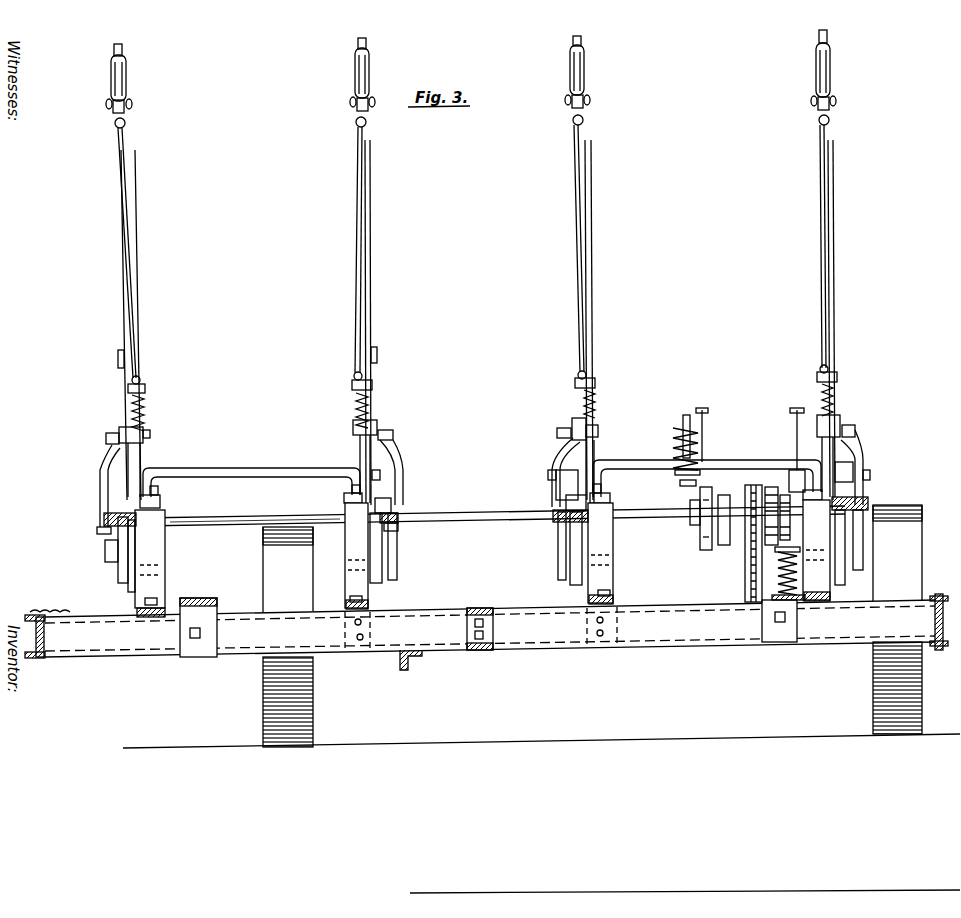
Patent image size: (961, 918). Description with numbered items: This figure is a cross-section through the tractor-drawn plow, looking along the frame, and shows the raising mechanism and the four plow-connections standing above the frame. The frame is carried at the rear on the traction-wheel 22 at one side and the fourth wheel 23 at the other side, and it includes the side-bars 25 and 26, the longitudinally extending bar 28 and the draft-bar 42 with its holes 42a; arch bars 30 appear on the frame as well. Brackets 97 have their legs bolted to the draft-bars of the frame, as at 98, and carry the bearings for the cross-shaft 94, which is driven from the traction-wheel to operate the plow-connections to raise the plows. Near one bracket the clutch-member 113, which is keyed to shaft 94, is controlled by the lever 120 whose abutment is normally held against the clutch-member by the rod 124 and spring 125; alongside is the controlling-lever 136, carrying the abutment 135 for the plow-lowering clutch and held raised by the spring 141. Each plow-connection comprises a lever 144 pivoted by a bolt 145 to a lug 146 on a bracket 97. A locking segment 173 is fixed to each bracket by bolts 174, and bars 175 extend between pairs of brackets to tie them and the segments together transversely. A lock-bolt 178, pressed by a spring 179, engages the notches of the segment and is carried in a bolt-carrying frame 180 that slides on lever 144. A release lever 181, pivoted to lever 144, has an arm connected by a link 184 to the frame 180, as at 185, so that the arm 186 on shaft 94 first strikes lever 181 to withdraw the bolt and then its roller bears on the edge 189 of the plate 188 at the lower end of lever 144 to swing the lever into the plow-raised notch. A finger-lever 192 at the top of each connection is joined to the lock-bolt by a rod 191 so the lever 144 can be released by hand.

The traction-wheel 22 is at (873, 676).
The fourth wheel 23 is at (313, 700).
The side-bar 25 is at (935, 620).
The side-bar 26 is at (47, 640).
The longitudinally extending bar 28 is at (410, 662).
The arch bar 30 is at (206, 604).
The draft-bar 42 is at (480, 608).
The bolt holes 42a is at (364, 625).
The cross-shaft 94 is at (476, 517).
The bracket 97 is at (160, 552).
The bolted connection 98 is at (158, 600).
The clutch-member 113 is at (770, 487).
The lever 120 is at (796, 420).
The rod 124 is at (748, 565).
The spring 125 is at (775, 598).
The abutment 135 is at (712, 548).
The controlling-lever 136 is at (708, 425).
The spring 141 is at (673, 435).
The lever 144 is at (132, 326).
The bolt 145 is at (100, 485).
The lug 146 is at (158, 490).
The locking segment 173 is at (143, 445).
The bolt 174 is at (158, 503).
The bar 175 is at (248, 468).
The lock-bolt 178 is at (145, 412).
The spring 179 is at (147, 402).
The bolt-carrying frame 180 is at (121, 432).
The lever 181 is at (118, 573).
The link 184 is at (100, 478).
The connection 185 is at (106, 438).
The arm 186 is at (107, 548).
The plate 188 is at (130, 588).
The edge 189 is at (390, 553).
The rod 191 is at (130, 246).
The finger-lever 192 is at (126, 82).